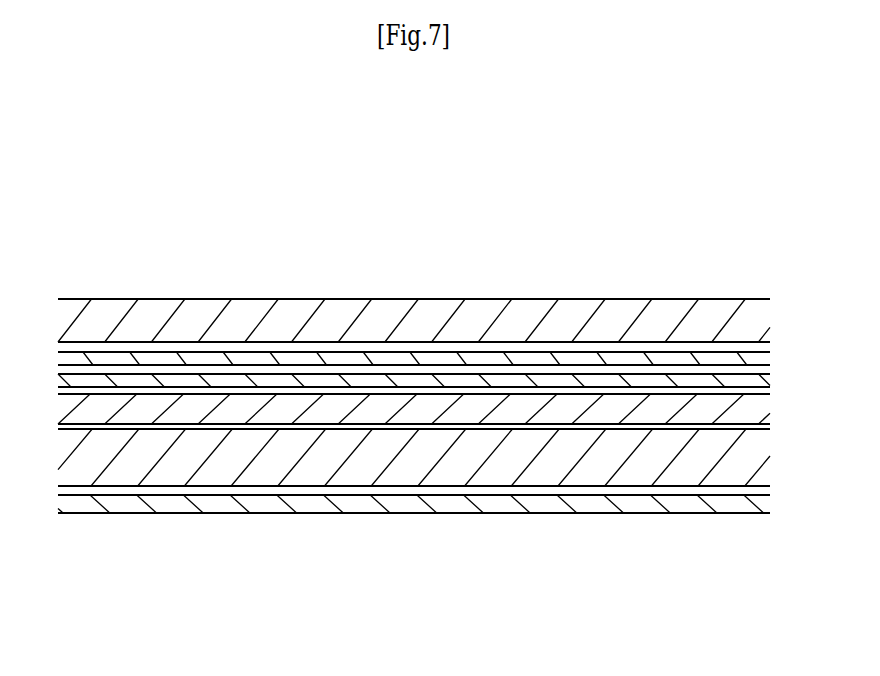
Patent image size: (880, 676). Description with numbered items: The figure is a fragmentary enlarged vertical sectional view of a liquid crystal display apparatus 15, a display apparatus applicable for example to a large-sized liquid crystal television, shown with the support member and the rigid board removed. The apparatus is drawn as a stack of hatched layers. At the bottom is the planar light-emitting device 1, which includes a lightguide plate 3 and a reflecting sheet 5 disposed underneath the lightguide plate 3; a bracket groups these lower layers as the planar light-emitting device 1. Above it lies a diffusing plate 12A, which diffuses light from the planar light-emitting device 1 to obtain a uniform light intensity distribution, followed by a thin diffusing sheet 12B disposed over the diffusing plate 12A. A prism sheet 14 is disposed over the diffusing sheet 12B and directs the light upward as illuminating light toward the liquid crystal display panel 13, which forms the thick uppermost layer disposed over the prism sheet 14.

The planar light-emitting device 1 is at (443, 525).
The lightguide plate 3 is at (147, 487).
The reflecting sheet 5 is at (382, 513).
The diffusing plate 12A is at (652, 427).
The diffusing sheet 12B is at (557, 389).
The liquid crystal display panel 13 is at (508, 299).
The prism sheet 14 is at (487, 366).
The liquid crystal display apparatus 15 is at (598, 260).